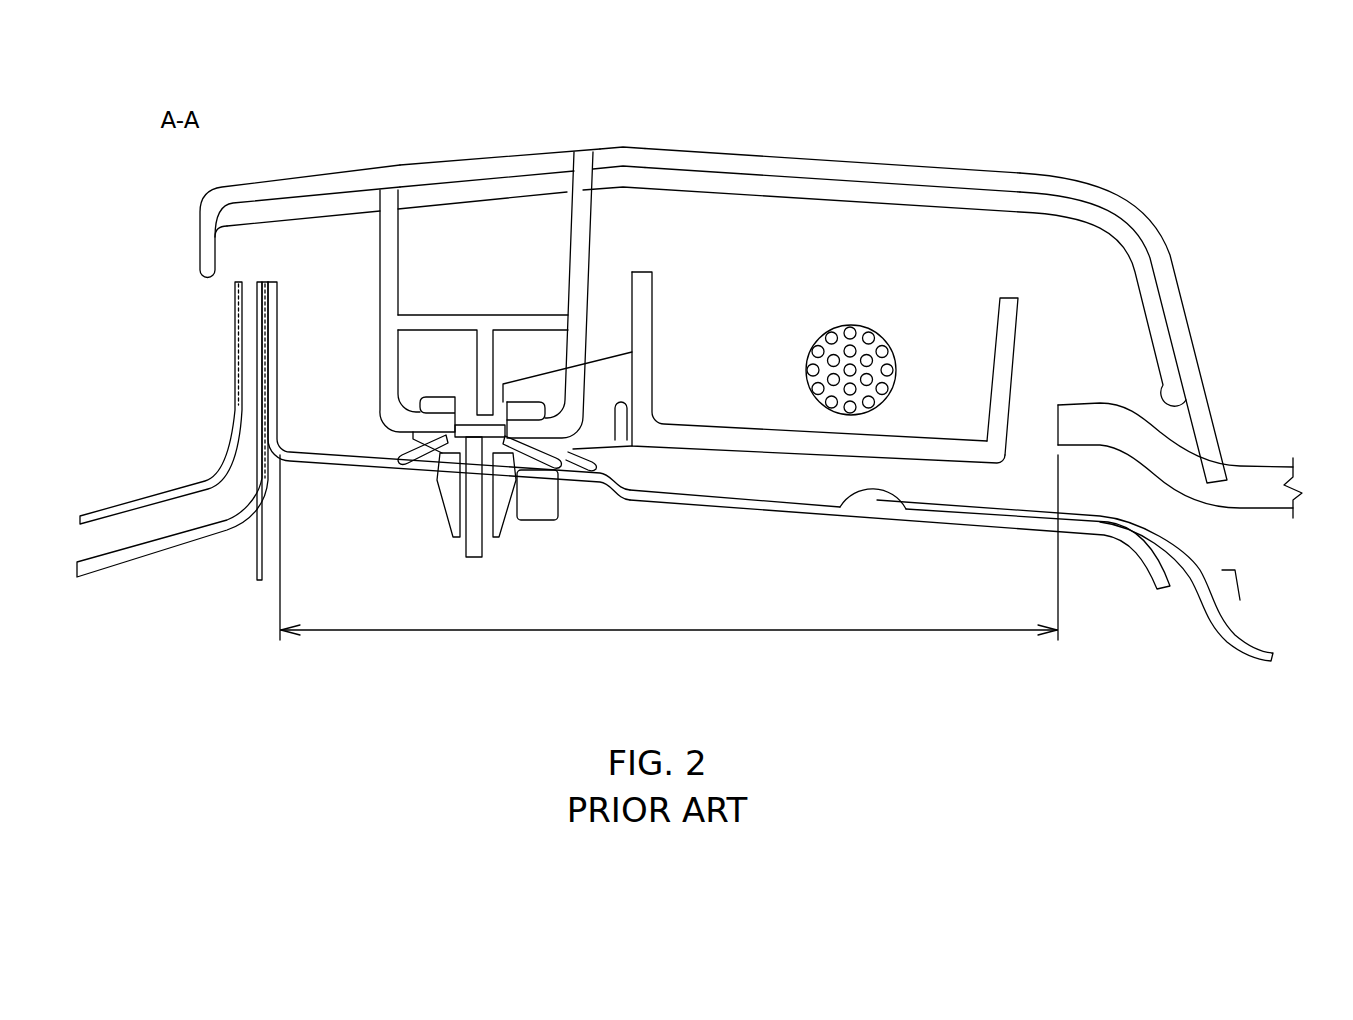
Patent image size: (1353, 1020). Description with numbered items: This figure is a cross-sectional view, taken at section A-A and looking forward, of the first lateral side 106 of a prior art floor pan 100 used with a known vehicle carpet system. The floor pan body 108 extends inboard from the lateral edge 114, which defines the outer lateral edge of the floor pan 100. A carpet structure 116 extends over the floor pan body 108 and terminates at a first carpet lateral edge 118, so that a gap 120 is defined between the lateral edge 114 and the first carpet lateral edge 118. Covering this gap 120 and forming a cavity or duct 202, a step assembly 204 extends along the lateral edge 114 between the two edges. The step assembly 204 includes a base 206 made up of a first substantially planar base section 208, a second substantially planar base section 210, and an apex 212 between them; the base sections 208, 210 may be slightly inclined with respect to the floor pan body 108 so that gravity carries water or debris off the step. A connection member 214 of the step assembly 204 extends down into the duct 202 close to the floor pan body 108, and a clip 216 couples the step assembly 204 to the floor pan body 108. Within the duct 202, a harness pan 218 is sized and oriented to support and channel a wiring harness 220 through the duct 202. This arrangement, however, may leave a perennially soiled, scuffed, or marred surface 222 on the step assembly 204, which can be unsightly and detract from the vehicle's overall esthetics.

The floor pan 100 is at (1220, 571).
The first lateral side 106 is at (373, 477).
The floor pan body 108 is at (738, 511).
The lateral edge 114 is at (280, 383).
The carpet structure 116 is at (1257, 467).
The first carpet lateral edge 118 is at (1100, 403).
The gap 120 is at (717, 632).
The duct 202 is at (797, 287).
The step assembly 204 is at (1173, 253).
The base 206 is at (618, 93).
The first substantially planar base section 208 is at (920, 166).
The second substantially planar base section 210 is at (433, 168).
The apex 212 is at (618, 147).
The connection member 214 is at (593, 230).
The clip 216 is at (437, 513).
The harness pan 218 is at (1000, 322).
The wiring harness 220 is at (806, 358).
The surface 222 is at (523, 157).